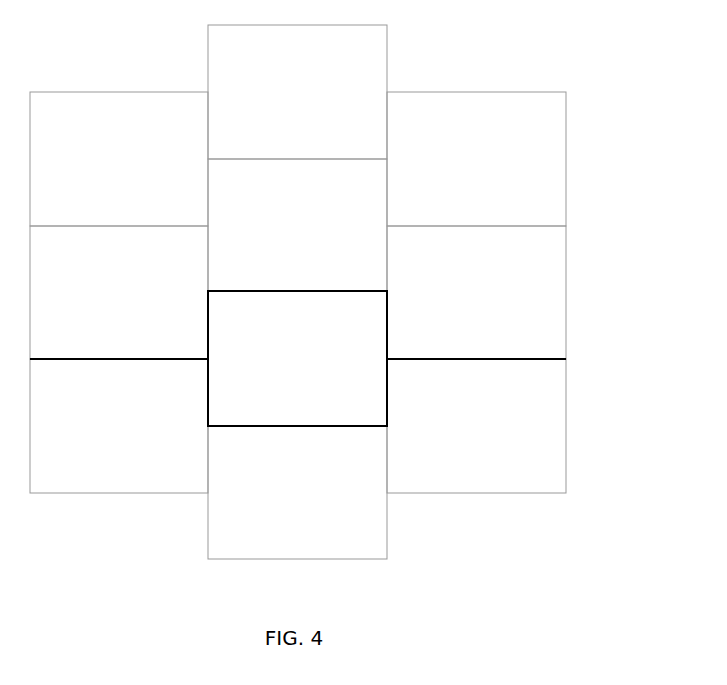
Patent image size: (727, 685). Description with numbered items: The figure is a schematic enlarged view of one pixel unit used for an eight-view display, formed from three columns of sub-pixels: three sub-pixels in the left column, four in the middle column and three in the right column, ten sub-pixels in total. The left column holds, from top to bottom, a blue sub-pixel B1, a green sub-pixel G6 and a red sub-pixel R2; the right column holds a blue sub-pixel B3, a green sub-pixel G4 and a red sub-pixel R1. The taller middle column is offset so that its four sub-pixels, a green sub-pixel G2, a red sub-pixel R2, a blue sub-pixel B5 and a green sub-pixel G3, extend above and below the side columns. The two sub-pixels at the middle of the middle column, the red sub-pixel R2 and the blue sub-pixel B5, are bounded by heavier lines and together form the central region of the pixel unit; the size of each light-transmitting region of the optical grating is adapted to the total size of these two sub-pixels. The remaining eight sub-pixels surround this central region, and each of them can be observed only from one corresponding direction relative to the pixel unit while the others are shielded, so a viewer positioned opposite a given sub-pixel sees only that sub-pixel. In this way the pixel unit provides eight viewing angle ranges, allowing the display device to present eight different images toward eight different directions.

The blue sub-pixel B1 is at (119, 159).
The green sub-pixel G2 is at (297, 92).
The blue sub-pixel B3 is at (476, 159).
The green sub-pixel G6 is at (119, 292).
The red sub-pixel R2 is at (297, 225).
The green sub-pixel G4 is at (476, 292).
The blue sub-pixel B5 is at (297, 358).
The red sub-pixel R1 is at (476, 399).
The green sub-pixel G3 is at (297, 492).